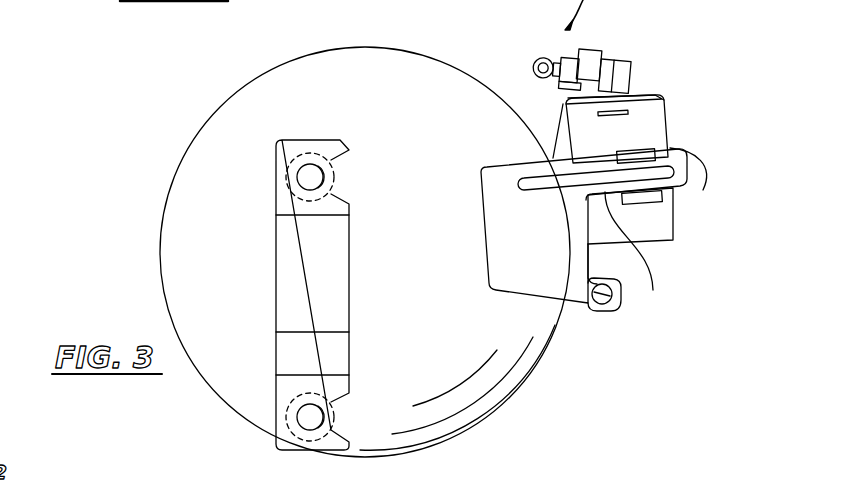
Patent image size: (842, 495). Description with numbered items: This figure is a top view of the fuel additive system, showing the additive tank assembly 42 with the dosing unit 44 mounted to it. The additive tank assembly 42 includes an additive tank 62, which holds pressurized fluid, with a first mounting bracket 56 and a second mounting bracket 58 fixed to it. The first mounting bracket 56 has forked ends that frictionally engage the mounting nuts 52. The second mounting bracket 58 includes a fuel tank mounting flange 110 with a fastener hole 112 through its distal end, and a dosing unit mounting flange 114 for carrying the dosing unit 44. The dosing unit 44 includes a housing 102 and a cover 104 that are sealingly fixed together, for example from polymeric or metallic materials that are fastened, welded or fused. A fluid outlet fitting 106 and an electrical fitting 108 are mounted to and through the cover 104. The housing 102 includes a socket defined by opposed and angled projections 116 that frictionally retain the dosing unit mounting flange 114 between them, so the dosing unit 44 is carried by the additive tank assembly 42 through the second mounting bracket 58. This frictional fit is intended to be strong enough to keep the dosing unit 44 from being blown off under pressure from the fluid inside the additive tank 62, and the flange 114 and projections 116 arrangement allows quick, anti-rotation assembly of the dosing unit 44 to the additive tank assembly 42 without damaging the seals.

The additive tank assembly 42 is at (552, 398).
The dosing unit 44 is at (672, 236).
The mounting nuts 52 is at (297, 180).
The first mounting bracket 56 is at (330, 289).
The second mounting bracket 58 is at (541, 249).
The additive tank 62 is at (165, 196).
The housing 102 is at (665, 118).
The cover 104 is at (653, 97).
The fluid outlet fitting 106 is at (590, 58).
The electrical fitting 108 is at (632, 66).
The fuel tank mounting flange 110 is at (577, 295).
The fastener hole 112 is at (612, 298).
The dosing unit mounting flange 114 is at (642, 257).
The angled projections 116 is at (655, 200).